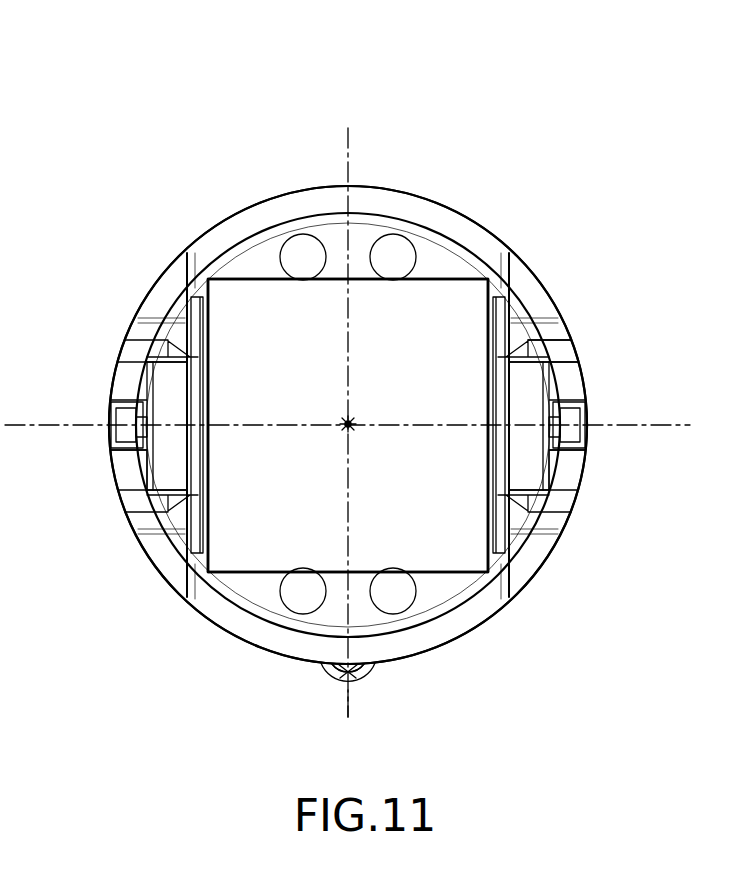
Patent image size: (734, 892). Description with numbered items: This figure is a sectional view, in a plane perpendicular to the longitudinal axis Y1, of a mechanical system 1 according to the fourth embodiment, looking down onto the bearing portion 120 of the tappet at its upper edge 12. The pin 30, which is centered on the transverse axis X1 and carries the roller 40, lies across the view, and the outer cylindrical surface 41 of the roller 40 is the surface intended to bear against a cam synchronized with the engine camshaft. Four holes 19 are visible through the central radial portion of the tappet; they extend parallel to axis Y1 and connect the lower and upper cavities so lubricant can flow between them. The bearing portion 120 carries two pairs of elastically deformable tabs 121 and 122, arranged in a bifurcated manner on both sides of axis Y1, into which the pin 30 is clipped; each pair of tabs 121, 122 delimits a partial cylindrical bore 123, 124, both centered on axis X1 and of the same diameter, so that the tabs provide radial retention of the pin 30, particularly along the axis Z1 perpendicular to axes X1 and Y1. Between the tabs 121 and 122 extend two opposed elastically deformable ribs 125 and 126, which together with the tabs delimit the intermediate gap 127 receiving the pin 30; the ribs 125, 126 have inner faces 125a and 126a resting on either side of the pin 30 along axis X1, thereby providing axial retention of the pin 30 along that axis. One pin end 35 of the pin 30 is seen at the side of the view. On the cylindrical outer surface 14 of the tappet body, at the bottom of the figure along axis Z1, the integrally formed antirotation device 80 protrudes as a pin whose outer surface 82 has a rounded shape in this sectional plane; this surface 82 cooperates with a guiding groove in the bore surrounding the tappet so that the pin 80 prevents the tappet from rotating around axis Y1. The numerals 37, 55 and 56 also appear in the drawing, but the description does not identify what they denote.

The mechanical system 1 is at (123, 193).
The upper edge 12 is at (473, 605).
The cylindrical outer surface 14 is at (275, 656).
The holes 19 is at (400, 246).
The pin 30 is at (175, 383).
The pin end 35 is at (150, 381).
The right bracket 37 is at (547, 378).
The roller 40 is at (234, 303).
The outer cylindrical surface 41 is at (281, 313).
The left plate 55 is at (185, 298).
The right plate 56 is at (510, 300).
The antirotation device 80 is at (328, 672).
The outer surface 82 is at (378, 673).
The bearing portion 120 is at (612, 362).
The tabs 121 is at (130, 347).
The tabs 122 is at (545, 347).
The partial cylindrical bore 123 is at (135, 482).
The partial cylindrical bore 124 is at (567, 483).
The rib 125 is at (123, 433).
The inner face 125a is at (150, 434).
The rib 126 is at (573, 433).
The inner face 126a is at (541, 433).
The intermediate gap 127 is at (505, 200).
The transverse axis X1 is at (367, 420).
The longitudinal axis Y1 is at (335, 422).
The axis Z1 is at (345, 730).